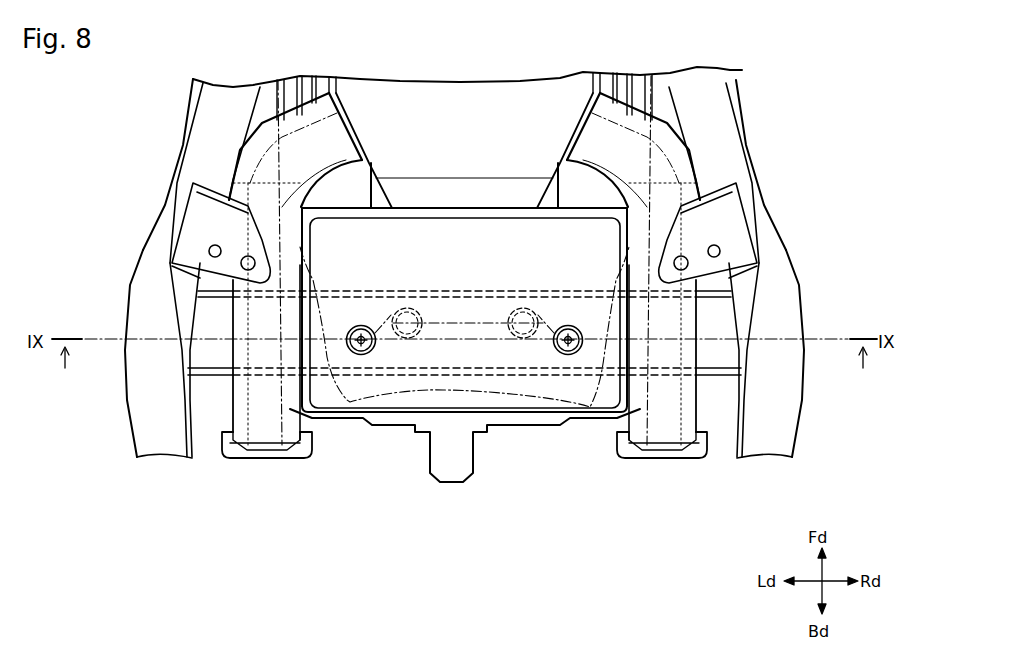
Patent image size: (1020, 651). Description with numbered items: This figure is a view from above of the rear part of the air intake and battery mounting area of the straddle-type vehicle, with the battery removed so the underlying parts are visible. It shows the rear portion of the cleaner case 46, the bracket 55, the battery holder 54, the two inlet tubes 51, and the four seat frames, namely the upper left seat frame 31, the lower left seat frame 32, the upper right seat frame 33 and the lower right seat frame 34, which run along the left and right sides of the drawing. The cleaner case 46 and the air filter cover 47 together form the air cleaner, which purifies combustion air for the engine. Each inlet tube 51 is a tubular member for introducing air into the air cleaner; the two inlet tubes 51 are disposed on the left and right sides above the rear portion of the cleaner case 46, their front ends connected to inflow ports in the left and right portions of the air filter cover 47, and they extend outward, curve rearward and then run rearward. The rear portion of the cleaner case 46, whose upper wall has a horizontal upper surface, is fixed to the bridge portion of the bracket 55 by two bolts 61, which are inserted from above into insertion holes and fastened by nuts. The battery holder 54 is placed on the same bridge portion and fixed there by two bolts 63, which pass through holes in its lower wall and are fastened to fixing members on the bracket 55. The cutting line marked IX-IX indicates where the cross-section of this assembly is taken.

The upper left seat frame 31 is at (160, 280).
The lower left seat frame 32 is at (197, 99).
The upper right seat frame 33 is at (773, 277).
The lower right seat frame 34 is at (737, 93).
The cleaner case 46 is at (280, 84).
The air filter cover 47 is at (466, 97).
The inlet tube 51 is at (265, 432).
The battery holder 54 is at (493, 418).
The bracket 55 is at (727, 377).
The bolt 61 is at (408, 338).
The bolt 63 is at (362, 355).